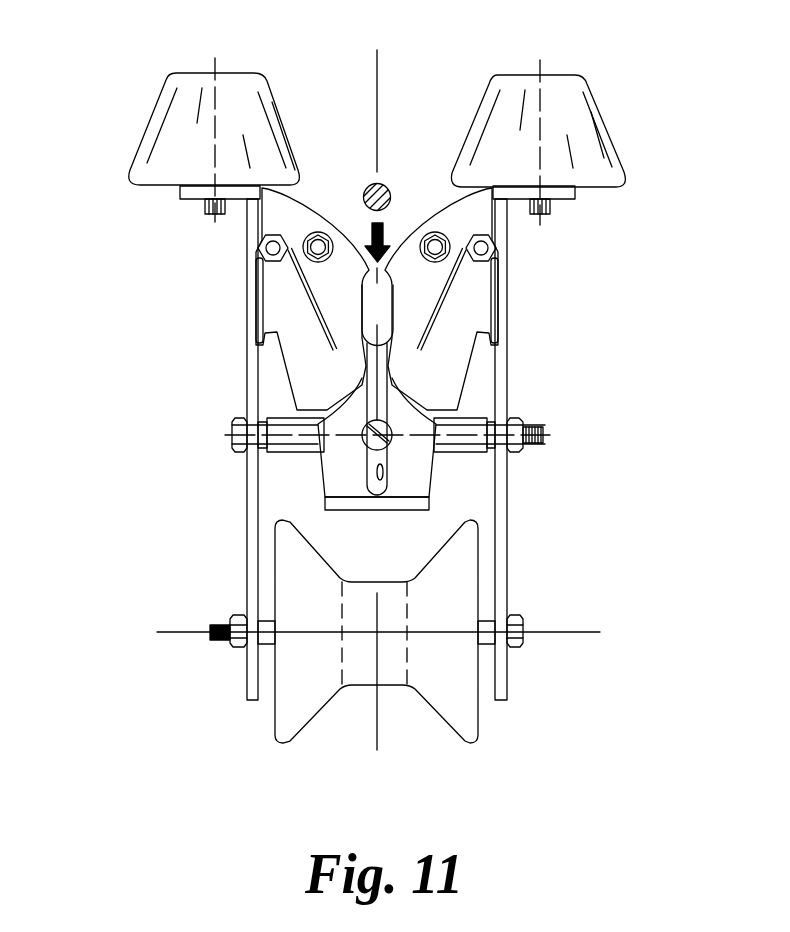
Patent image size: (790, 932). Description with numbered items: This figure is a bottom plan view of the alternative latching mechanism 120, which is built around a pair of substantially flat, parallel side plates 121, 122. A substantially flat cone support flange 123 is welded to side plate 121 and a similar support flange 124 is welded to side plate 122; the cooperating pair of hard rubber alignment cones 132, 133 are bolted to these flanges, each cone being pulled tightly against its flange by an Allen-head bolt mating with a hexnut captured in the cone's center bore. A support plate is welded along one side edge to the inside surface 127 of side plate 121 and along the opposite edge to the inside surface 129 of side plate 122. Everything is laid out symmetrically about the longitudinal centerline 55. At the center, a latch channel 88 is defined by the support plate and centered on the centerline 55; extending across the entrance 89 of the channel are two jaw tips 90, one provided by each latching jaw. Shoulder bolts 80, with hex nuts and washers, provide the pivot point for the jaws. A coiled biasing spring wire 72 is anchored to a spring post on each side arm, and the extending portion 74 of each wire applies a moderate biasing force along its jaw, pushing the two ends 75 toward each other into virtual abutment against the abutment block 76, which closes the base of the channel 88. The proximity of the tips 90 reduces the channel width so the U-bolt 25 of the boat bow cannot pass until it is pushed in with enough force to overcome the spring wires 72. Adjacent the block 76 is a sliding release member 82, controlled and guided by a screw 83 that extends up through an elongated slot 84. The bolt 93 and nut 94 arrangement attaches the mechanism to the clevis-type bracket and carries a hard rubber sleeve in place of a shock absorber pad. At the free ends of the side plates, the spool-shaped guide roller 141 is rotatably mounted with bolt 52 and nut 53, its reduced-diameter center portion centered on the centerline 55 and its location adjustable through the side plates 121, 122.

The latching mechanism 120 is at (168, 745).
The side plate 121 is at (507, 523).
The side plate 122 is at (248, 549).
The cone support flange 123 is at (555, 195).
The support flange 124 is at (182, 192).
The inside surface 127 is at (496, 545).
The inside surface 129 is at (265, 512).
The alignment cone 132 is at (547, 94).
The alignment cone 133 is at (192, 92).
The U-bolt 25 is at (369, 183).
The shoulder bolt 80 is at (313, 240).
The entrance 89 is at (363, 256).
The jaw tip 90 is at (358, 285).
The latch channel 88 is at (390, 318).
The coiled biasing spring wire 72 is at (257, 281).
The extending portion 74 is at (305, 292).
The abutment block 76 is at (362, 375).
The end 75 is at (398, 381).
The slot 84 is at (379, 470).
The sliding release member 82 is at (405, 485).
The screw 83 is at (388, 447).
The bolt 93 is at (232, 433).
The nut 94 is at (545, 433).
The guide roller 141 is at (293, 717).
The longitudinal centerline 55 is at (375, 735).
The nut 53 is at (233, 648).
The bolt 52 is at (520, 647).